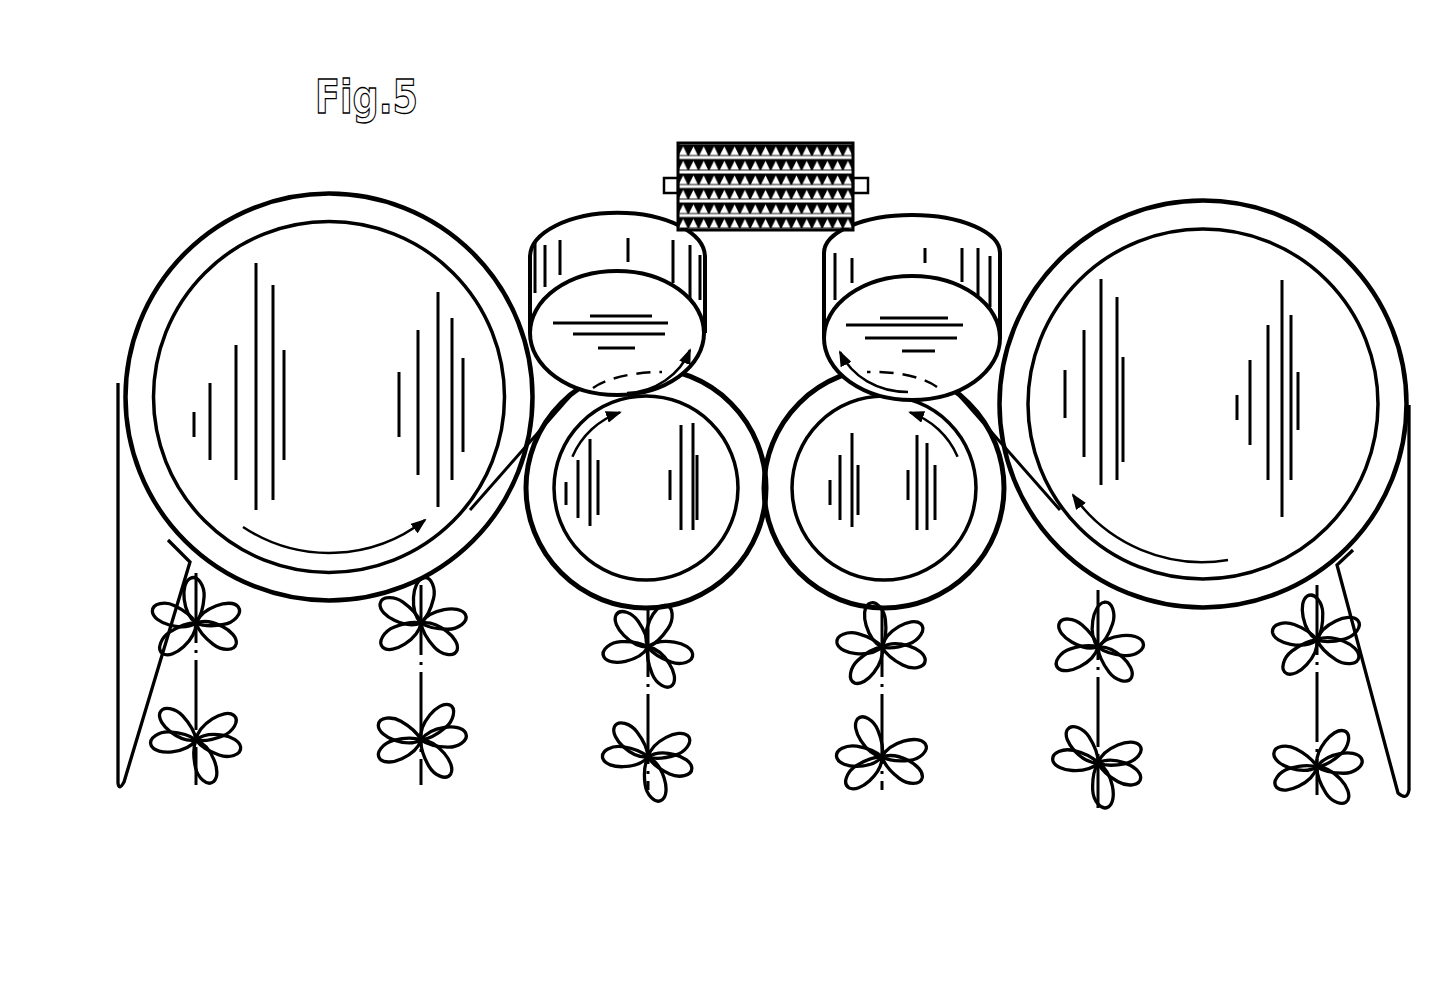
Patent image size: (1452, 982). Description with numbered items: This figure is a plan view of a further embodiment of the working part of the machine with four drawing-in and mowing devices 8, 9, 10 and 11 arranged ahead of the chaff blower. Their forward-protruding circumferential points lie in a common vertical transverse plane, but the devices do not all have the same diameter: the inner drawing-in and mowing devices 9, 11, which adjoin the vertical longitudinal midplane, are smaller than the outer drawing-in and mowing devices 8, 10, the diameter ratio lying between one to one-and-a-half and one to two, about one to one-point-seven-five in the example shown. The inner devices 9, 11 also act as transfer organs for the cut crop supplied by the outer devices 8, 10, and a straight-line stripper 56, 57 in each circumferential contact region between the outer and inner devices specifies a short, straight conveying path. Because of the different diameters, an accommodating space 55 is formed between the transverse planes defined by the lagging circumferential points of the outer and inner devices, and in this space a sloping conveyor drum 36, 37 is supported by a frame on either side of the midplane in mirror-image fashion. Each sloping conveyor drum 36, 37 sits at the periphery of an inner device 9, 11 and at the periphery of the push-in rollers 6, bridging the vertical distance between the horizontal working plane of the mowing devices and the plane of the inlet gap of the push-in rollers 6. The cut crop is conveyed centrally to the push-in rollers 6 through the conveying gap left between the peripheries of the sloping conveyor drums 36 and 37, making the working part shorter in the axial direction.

The push-in rollers 6 is at (752, 143).
The outer drawing-in and mowing device 8 is at (210, 287).
The inner drawing-in and mowing device 9 is at (597, 550).
The outer drawing-in and mowing device 10 is at (1306, 286).
The inner drawing-in and mowing device 11 is at (930, 548).
The sloping conveyor drum 36 is at (578, 240).
The sloping conveyor drum 37 is at (962, 250).
The accommodating space 55 is at (752, 333).
The straight-line stripper 56 is at (497, 470).
The straight-line stripper 57 is at (1020, 456).